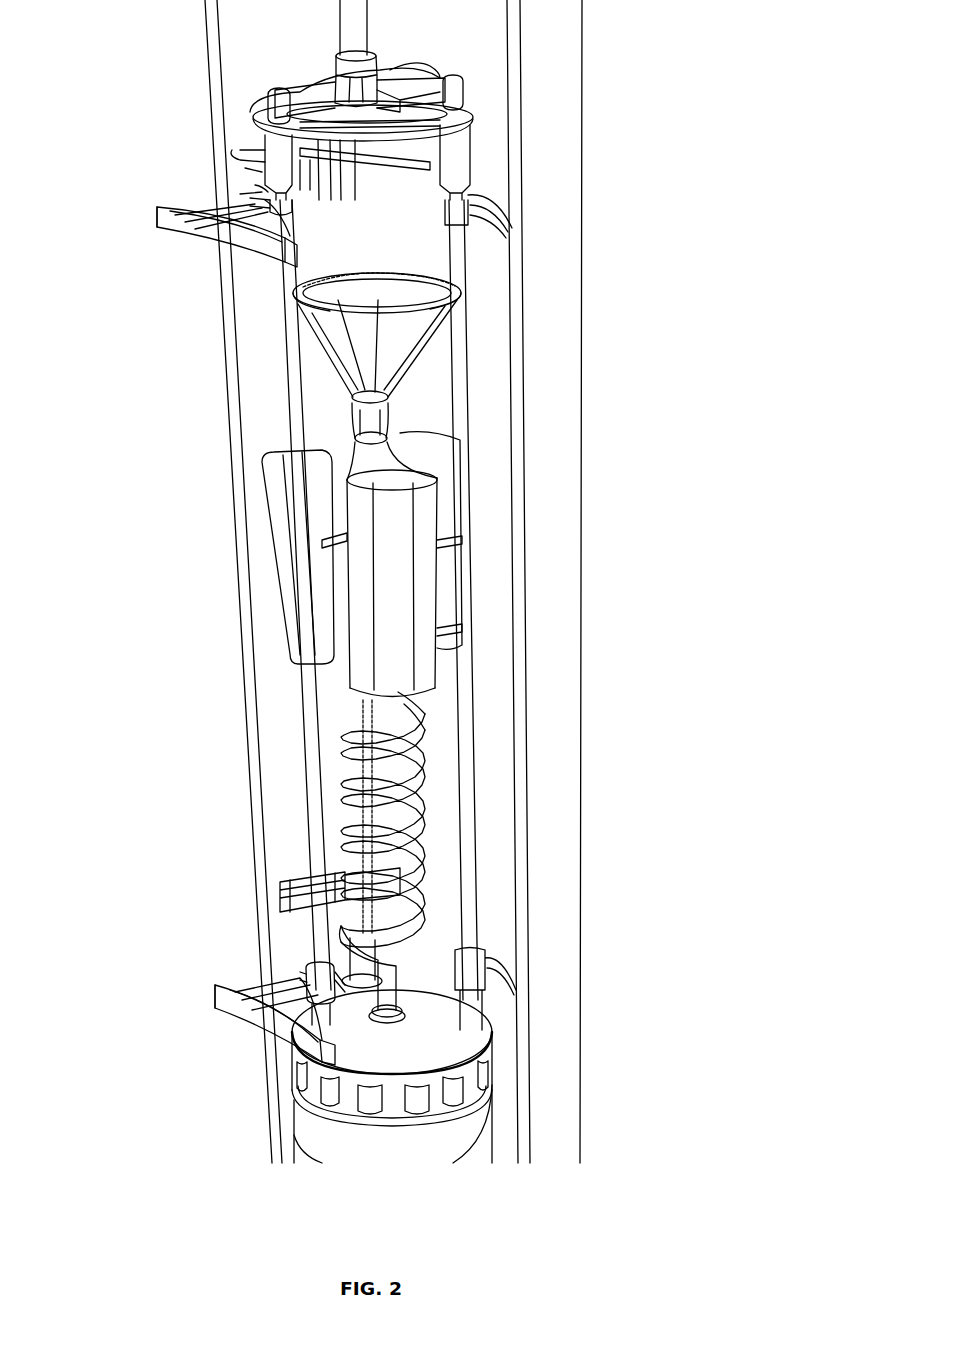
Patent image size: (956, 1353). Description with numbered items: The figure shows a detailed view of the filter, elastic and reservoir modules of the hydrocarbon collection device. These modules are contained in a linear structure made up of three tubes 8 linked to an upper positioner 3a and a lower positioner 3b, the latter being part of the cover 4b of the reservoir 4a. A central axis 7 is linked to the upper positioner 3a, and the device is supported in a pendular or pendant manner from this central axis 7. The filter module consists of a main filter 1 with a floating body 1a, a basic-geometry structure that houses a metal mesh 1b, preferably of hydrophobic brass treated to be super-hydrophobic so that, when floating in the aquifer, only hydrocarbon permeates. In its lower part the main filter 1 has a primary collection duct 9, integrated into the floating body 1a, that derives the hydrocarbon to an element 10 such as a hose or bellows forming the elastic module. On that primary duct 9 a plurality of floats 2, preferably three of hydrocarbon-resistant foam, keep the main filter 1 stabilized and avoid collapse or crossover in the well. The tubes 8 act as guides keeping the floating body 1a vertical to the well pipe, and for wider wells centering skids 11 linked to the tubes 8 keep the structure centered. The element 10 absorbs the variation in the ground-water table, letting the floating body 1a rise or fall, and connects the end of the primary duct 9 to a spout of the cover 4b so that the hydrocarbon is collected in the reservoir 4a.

The main filter 1 is at (357, 338).
The floating body 1a is at (300, 320).
The metal mesh 1b is at (340, 357).
The floats 2 is at (392, 620).
The upper positioner 3a is at (235, 188).
The lower positioner 3b is at (290, 972).
The reservoir 4a is at (485, 1152).
The cover 4b is at (440, 1048).
The central axis 7 is at (355, 34).
The tubes 8 is at (465, 707).
The primary collection duct 9 is at (367, 415).
The element 10 is at (340, 839).
The centering skids 11 is at (192, 239).